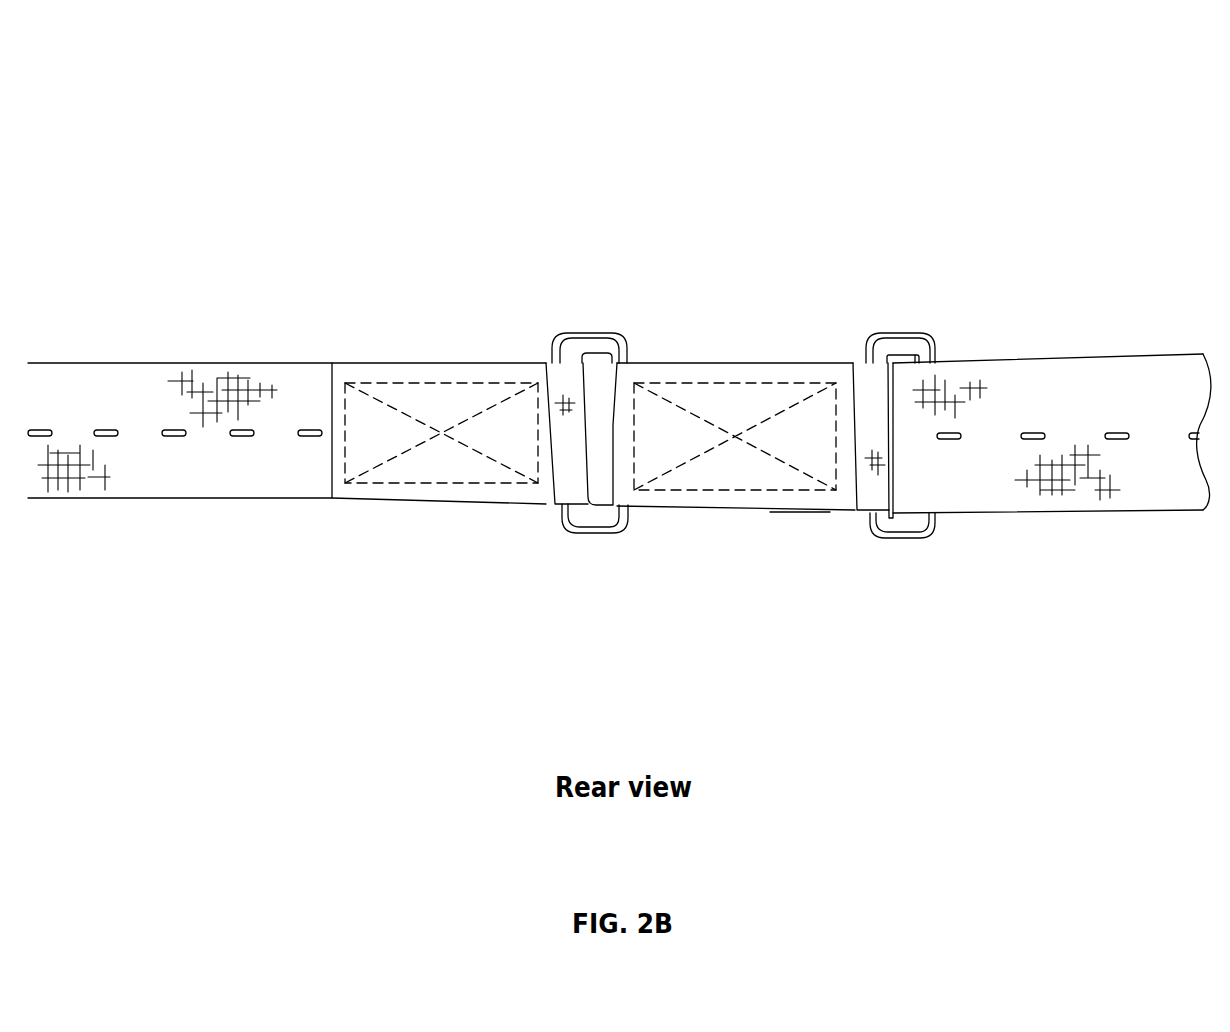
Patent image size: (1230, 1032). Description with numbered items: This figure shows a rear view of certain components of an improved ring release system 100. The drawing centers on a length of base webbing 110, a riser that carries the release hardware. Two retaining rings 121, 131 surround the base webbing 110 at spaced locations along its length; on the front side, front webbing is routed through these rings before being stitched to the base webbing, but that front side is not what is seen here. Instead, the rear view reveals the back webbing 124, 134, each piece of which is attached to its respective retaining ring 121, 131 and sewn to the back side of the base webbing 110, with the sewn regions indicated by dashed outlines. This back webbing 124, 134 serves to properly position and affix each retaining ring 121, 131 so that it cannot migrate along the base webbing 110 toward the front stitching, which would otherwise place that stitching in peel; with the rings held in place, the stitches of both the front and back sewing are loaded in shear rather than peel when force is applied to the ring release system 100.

The ring release system 100 is at (200, 95).
The base webbing 110 is at (268, 483).
The retaining ring 121 is at (598, 350).
The back webbing 124 is at (438, 433).
The retaining ring 131 is at (893, 350).
The back webbing 134 is at (817, 417).